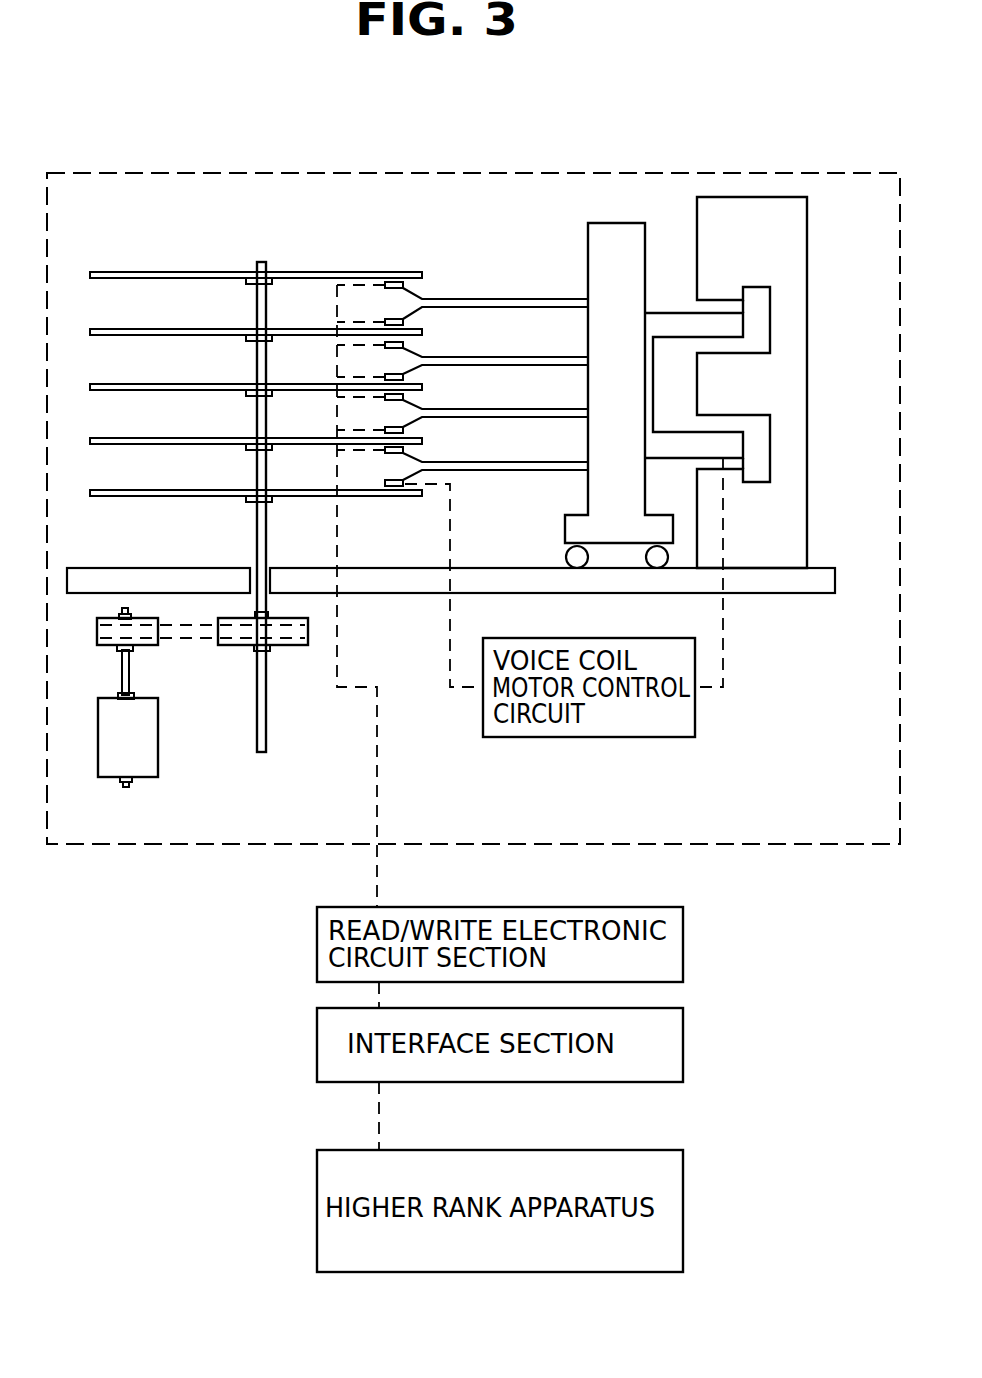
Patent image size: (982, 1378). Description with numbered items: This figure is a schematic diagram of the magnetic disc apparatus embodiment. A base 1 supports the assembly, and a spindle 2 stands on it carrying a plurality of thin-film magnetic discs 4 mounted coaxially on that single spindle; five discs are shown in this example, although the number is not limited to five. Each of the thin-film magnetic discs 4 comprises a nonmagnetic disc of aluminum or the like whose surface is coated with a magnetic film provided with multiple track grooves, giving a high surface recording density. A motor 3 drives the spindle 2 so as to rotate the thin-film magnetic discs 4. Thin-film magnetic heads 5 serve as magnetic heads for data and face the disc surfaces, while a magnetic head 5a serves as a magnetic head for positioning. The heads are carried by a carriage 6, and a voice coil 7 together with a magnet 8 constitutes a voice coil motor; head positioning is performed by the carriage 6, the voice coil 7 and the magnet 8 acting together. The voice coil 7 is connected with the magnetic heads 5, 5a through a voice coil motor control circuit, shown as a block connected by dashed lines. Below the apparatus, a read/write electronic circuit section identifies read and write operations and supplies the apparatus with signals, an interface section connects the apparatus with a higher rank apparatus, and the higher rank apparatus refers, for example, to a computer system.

The base 1 is at (413, 595).
The spindle 2 is at (257, 535).
The motor 3 is at (160, 740).
The thin-film magnetic discs 4 is at (321, 271).
The thin-film magnetic head 5 is at (405, 376).
The magnetic head for positioning 5a is at (393, 488).
The carriage 6 is at (614, 231).
The voice coil 7 is at (710, 432).
The magnet 8 is at (767, 199).